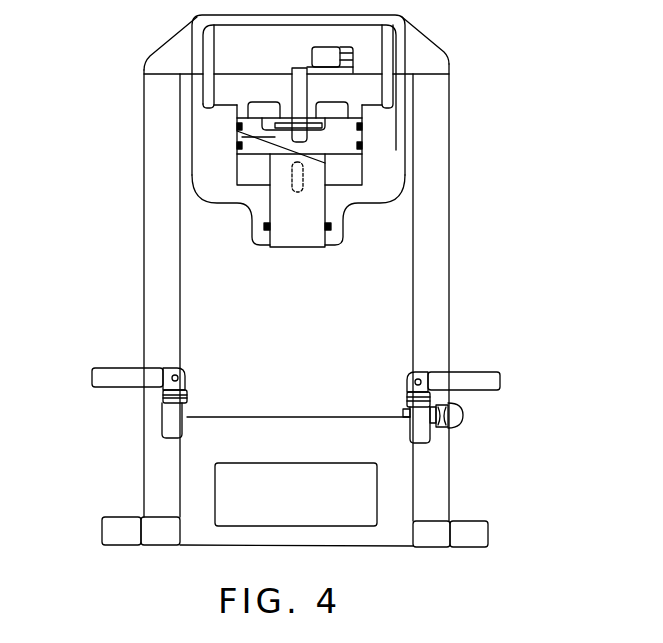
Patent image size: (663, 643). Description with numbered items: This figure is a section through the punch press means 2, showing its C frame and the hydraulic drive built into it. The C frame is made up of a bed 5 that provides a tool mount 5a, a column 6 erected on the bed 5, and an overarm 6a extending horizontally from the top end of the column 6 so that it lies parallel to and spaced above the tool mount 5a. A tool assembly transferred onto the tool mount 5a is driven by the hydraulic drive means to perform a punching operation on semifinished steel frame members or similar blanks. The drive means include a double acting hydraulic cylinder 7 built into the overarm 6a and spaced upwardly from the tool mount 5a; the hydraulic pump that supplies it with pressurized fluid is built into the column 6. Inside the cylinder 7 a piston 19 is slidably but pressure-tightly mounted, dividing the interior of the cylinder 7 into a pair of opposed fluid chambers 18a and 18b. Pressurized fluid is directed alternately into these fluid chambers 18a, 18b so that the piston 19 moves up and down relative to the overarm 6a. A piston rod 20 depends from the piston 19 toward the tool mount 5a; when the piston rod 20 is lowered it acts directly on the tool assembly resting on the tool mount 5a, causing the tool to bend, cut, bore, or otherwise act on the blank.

The punch press means 2 is at (478, 34).
The bed 5 is at (195, 470).
The tool mount 5a is at (320, 417).
The column 6 is at (157, 202).
The overarm 6a is at (371, 198).
The double acting hydraulic cylinder 7 is at (182, 127).
The fluid chamber 18a is at (340, 104).
The fluid chamber 18b is at (343, 172).
The piston 19 is at (343, 137).
The piston rod 20 is at (297, 233).